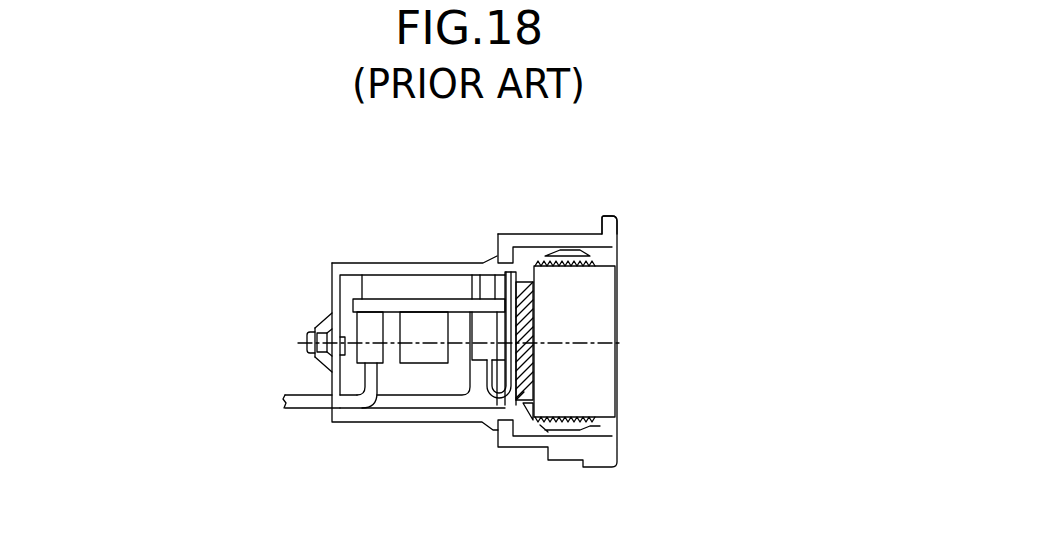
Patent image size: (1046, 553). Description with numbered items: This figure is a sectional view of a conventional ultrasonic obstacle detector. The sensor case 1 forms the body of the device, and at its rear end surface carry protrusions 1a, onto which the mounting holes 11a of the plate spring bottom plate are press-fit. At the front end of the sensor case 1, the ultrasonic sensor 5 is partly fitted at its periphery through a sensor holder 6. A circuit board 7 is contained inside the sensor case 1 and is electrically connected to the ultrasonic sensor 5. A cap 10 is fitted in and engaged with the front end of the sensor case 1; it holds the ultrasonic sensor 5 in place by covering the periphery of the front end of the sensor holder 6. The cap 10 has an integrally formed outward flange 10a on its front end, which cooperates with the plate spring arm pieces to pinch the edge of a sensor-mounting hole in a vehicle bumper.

The sensor case 1 is at (442, 263).
The protrusions 1a is at (308, 343).
The mounting holes 11a is at (318, 327).
The ultrasonic sensor 5 is at (594, 293).
The sensor holder 6 is at (558, 257).
The circuit board 7 is at (402, 367).
The cap 10 is at (616, 383).
The outward flange 10a is at (610, 227).